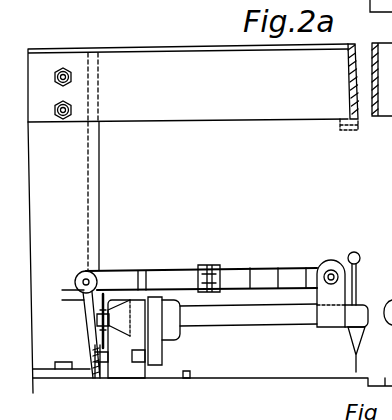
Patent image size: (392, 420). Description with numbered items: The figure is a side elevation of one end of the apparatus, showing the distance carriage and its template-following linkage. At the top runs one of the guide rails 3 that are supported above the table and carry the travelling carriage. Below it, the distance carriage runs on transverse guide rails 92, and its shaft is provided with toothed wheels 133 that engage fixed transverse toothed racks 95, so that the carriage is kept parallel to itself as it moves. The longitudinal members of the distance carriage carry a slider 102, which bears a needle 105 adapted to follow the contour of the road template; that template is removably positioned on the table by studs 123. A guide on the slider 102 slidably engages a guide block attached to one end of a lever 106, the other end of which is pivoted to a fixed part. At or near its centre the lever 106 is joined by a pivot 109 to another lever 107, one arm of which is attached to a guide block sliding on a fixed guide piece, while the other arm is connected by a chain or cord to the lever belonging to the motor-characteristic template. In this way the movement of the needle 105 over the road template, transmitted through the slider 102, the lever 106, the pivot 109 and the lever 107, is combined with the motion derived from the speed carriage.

The guide rail 3 is at (200, 73).
The toothed wheels 133 is at (106, 292).
The lever 107 is at (165, 271).
The pivot 109 is at (226, 253).
The lever 106 is at (286, 268).
The slider 102 is at (329, 268).
The transverse toothed racks 95 is at (98, 350).
The transverse guide rails 92 is at (122, 378).
The studs 123 is at (190, 378).
The needle 105 is at (352, 358).